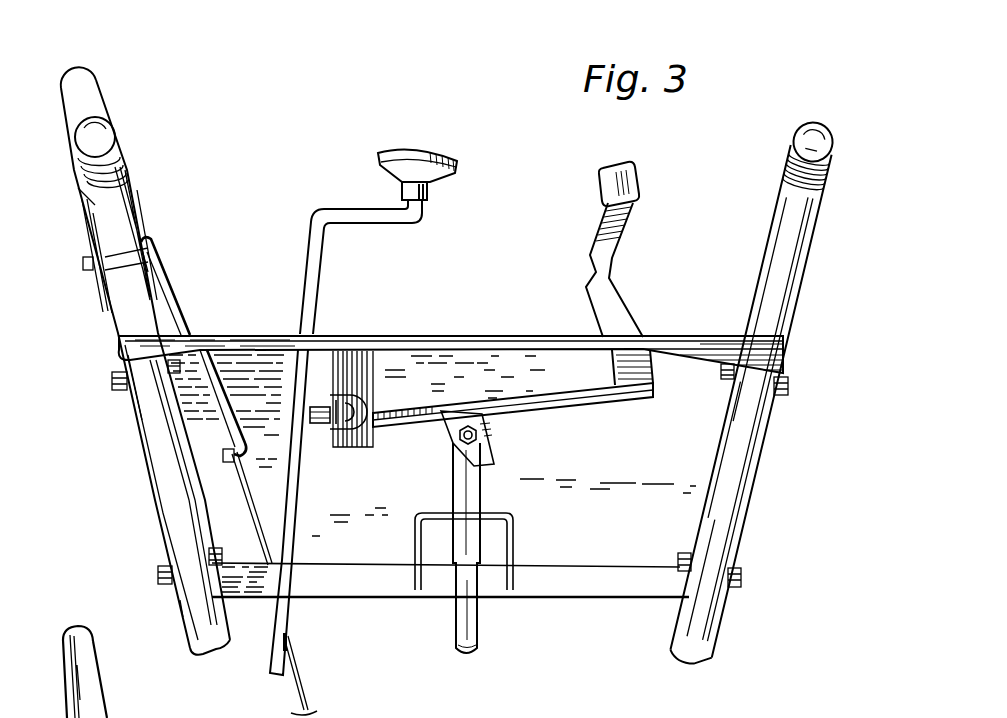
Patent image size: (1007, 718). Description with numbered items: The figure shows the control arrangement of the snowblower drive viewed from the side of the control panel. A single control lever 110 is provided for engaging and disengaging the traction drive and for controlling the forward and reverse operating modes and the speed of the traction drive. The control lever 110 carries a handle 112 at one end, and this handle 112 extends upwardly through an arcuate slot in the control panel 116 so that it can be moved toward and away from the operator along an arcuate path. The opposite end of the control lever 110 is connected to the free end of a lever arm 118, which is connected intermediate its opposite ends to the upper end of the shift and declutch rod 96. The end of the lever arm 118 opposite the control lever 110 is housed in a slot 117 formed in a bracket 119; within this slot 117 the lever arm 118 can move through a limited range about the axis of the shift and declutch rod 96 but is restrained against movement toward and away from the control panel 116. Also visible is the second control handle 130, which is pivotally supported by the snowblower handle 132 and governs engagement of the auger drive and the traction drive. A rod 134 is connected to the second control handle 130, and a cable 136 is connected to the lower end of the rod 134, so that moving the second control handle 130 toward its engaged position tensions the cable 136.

The shift and declutch rod 96 is at (466, 625).
The control lever 110 is at (608, 243).
The handle 112 is at (603, 177).
The control panel 116 is at (516, 340).
The slot 117 is at (342, 447).
The lever arm 118 is at (583, 395).
The bracket 119 is at (357, 375).
The second control handle 130 is at (80, 86).
The snowblower handle 132 is at (87, 135).
The rod 134 is at (166, 283).
The cable 136 is at (303, 677).